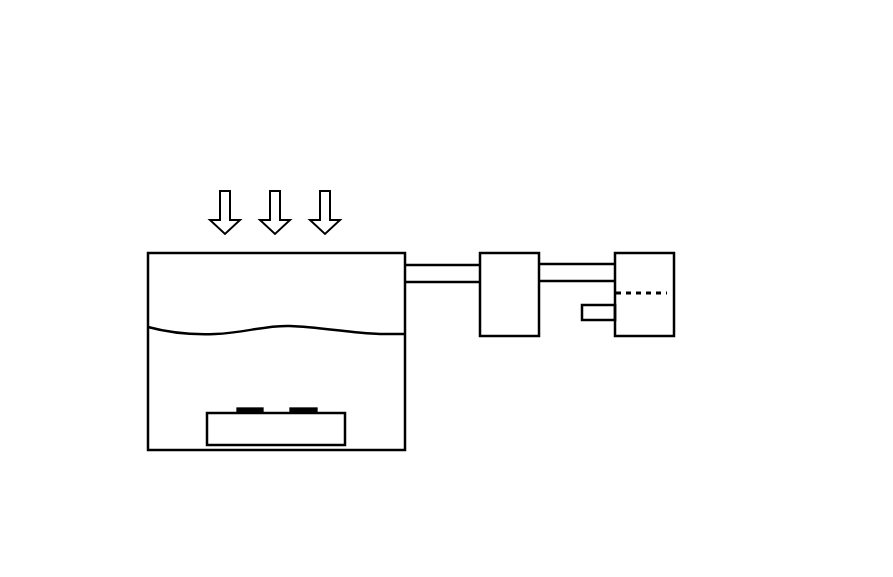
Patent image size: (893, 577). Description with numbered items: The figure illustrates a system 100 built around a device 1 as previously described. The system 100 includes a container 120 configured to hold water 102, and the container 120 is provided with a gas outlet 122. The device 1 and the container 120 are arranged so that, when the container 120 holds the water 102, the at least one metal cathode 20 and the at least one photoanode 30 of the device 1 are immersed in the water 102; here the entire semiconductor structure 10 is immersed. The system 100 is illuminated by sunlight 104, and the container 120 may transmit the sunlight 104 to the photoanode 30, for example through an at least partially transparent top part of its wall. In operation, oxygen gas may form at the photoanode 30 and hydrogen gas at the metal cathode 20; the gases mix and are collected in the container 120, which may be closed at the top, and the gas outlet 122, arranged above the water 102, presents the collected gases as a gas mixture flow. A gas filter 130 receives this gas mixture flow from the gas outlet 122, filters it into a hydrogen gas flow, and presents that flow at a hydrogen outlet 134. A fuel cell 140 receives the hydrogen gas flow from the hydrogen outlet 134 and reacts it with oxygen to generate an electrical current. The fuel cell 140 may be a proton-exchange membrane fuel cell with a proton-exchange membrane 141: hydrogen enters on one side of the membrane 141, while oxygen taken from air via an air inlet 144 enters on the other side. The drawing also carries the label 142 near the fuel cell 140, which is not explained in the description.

The system 100 is at (222, 88).
The device 1 is at (183, 470).
The semiconductor structure 10 is at (207, 428).
The metal cathode 20 is at (248, 402).
The photoanode 30 is at (302, 402).
The water 102 is at (173, 323).
The sunlight 104 is at (195, 193).
The container 120 is at (405, 378).
The gas outlet 122 is at (422, 248).
The gas filter 130 is at (517, 253).
The hydrogen outlet 134 is at (558, 256).
The fuel cell 140 is at (660, 253).
The proton-exchange membrane 141 is at (660, 285).
The reservoir 142 is at (697, 340).
The air inlet 144 is at (590, 337).